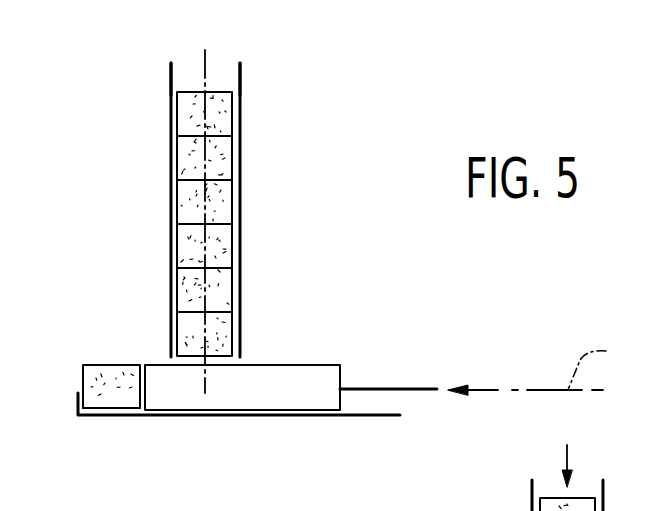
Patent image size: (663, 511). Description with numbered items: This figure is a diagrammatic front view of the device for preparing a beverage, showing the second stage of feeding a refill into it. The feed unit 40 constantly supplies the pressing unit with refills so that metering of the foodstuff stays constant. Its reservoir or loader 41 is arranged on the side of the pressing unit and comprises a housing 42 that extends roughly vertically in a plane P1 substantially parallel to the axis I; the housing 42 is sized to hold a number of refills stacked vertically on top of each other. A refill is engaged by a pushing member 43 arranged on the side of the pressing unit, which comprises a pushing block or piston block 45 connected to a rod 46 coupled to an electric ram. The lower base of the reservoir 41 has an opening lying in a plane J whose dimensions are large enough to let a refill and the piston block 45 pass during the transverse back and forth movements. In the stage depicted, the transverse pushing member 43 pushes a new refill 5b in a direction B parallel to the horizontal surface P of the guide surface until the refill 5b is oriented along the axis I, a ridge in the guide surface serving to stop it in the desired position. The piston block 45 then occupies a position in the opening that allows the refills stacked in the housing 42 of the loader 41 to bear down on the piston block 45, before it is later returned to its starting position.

The feed unit 40 is at (228, 182).
The reservoir or loader 41 is at (168, 175).
The housing 42 is at (183, 75).
The pushing member 43 is at (291, 310).
The pushing block or piston block 45 is at (287, 383).
The rod 46 is at (405, 388).
The plane P1 is at (207, 75).
The axis I is at (102, 380).
The new refill 5b is at (100, 410).
The horizontal surface P is at (128, 410).
The direction B is at (525, 374).
The plane J is at (591, 363).